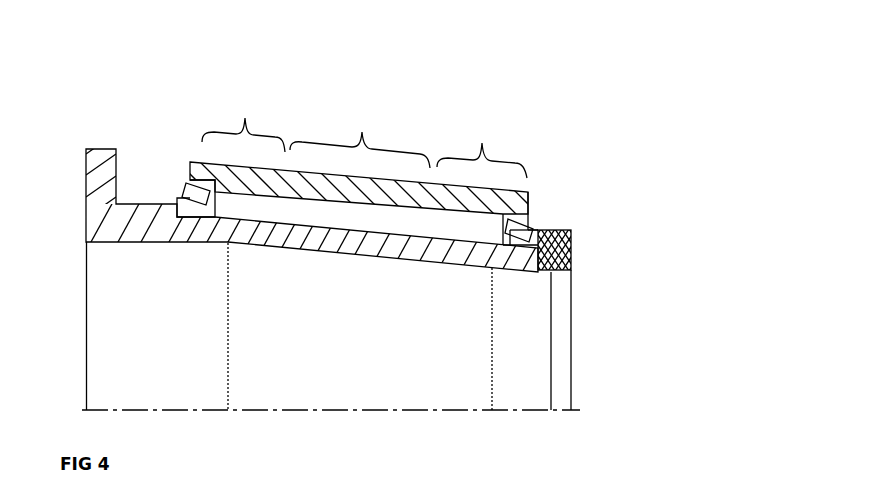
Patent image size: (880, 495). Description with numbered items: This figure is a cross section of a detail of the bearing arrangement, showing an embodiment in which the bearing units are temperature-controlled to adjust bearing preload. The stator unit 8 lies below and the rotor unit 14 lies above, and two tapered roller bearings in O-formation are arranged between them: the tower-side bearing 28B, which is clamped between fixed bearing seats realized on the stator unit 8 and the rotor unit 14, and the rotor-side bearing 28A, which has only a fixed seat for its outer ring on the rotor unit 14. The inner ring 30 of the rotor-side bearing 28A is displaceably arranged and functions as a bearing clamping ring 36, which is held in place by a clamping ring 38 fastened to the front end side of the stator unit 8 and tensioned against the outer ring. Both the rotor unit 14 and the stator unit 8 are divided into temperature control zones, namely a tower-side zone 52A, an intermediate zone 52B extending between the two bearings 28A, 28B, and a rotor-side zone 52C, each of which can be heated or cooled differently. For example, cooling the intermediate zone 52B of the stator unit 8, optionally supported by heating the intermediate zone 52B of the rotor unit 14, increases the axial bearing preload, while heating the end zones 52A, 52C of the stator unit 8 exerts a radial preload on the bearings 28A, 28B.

The stator unit 8 is at (118, 233).
The rotor unit 14 is at (527, 193).
The rotor-side bearing 28A is at (529, 226).
The tower-side bearing 28B is at (188, 191).
The inner ring 30 is at (641, 211).
The bearing clamping ring 36 is at (540, 231).
The clamping ring 38 is at (572, 238).
The tower-side temperature control zone 52A is at (206, 244).
The intermediate temperature control zone 52B is at (360, 252).
The rotor-side temperature control zone 52C is at (484, 261).